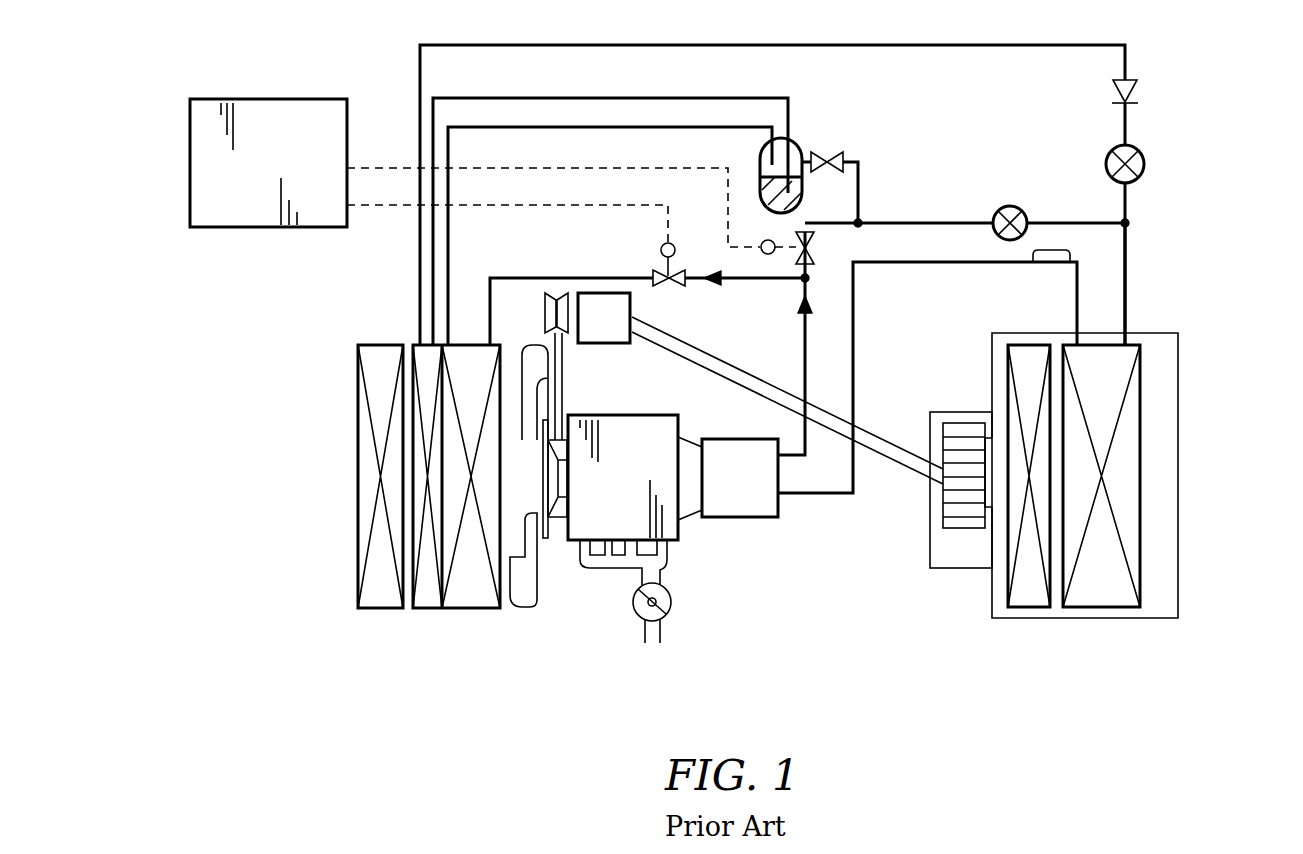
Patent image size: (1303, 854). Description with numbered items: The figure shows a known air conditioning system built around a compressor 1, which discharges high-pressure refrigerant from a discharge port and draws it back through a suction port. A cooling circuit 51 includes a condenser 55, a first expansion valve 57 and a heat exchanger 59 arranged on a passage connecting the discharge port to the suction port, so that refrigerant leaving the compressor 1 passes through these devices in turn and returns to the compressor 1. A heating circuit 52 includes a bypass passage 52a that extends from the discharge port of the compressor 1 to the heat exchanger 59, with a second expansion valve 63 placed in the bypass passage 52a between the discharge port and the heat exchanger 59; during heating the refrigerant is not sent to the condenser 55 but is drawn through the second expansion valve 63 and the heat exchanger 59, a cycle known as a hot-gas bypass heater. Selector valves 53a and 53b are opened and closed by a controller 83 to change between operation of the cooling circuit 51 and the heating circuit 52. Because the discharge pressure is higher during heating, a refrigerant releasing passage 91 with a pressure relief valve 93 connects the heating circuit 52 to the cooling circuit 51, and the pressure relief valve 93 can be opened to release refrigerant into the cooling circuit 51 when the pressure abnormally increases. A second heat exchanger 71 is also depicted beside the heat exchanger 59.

The compressor 1 is at (727, 508).
The cooling circuit 51 is at (648, 44).
The heating circuit 52 is at (958, 222).
The bypass passage 52a is at (1094, 224).
The selector valve 53a is at (656, 276).
The selector valve 53b is at (814, 248).
The condenser 55 is at (466, 612).
The first expansion valve 57 is at (1133, 148).
The heat exchanger 59 is at (1142, 432).
The second expansion valve 63 is at (1011, 206).
The evaporator 71 is at (1028, 610).
The controller 83 is at (318, 146).
The refrigerant releasing passage 91 is at (860, 172).
The pressure relief valve 93 is at (816, 156).